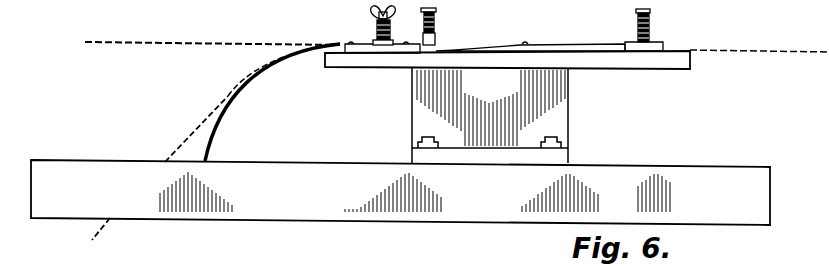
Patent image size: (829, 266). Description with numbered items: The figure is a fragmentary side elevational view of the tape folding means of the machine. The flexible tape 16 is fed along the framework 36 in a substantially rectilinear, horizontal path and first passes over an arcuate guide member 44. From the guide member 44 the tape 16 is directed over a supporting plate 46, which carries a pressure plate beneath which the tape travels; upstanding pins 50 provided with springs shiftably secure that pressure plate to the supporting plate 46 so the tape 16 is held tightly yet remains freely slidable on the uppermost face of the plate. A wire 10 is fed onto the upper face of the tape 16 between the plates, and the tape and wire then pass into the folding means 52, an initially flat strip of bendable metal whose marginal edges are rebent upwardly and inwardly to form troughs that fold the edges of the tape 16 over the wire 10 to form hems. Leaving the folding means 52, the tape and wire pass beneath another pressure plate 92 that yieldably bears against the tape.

The wire 10 is at (180, 45).
The flexible tape 16 is at (185, 136).
The framework 36 is at (508, 237).
The arcuate guide member 44 is at (246, 86).
The supporting plate 46 is at (598, 69).
The upstanding pins 50 is at (377, 25).
The folding means 52 is at (557, 47).
The pressure plate 92 is at (658, 44).